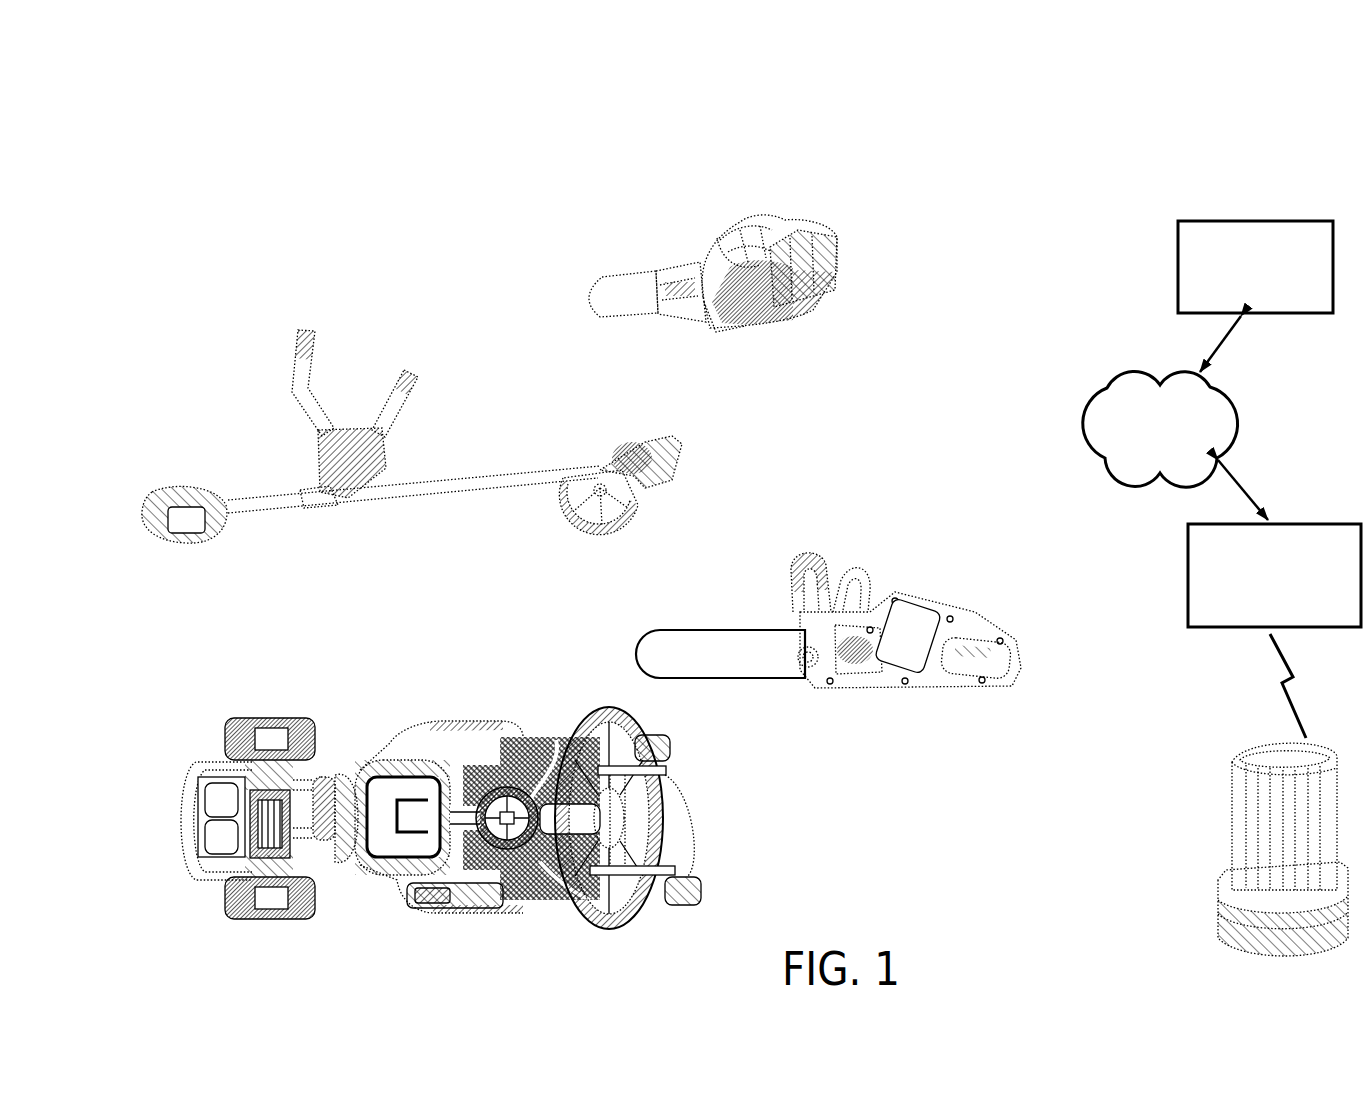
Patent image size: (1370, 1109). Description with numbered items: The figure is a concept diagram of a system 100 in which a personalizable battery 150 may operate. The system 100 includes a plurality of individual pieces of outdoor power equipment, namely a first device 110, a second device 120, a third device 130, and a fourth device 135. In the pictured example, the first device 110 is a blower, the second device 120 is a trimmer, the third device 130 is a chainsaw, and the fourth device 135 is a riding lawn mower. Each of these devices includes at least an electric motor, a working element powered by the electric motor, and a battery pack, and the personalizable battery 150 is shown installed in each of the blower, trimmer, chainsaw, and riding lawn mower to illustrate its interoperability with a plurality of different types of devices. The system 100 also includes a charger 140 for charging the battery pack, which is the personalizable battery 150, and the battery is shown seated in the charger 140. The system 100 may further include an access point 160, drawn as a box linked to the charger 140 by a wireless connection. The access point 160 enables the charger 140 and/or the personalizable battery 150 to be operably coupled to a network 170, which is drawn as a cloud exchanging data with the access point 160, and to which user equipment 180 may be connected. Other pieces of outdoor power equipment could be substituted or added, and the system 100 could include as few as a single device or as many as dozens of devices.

The system 100 is at (272, 158).
The first device 110 is at (693, 222).
The second device 120 is at (303, 448).
The third device 130 is at (852, 692).
The fourth device 135 is at (463, 703).
The charger 140 is at (1220, 915).
The personalizable battery 150 is at (787, 243).
The access point 160 is at (1235, 630).
The network 170 is at (1118, 383).
The user equipment 180 is at (1246, 220).